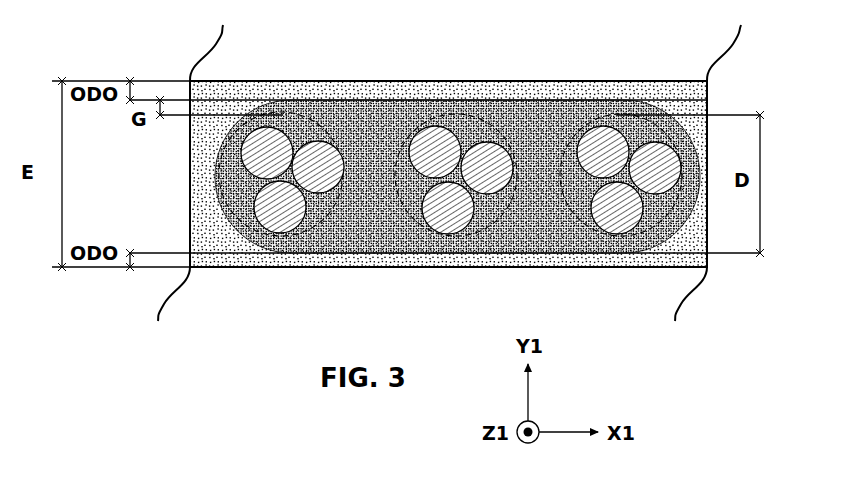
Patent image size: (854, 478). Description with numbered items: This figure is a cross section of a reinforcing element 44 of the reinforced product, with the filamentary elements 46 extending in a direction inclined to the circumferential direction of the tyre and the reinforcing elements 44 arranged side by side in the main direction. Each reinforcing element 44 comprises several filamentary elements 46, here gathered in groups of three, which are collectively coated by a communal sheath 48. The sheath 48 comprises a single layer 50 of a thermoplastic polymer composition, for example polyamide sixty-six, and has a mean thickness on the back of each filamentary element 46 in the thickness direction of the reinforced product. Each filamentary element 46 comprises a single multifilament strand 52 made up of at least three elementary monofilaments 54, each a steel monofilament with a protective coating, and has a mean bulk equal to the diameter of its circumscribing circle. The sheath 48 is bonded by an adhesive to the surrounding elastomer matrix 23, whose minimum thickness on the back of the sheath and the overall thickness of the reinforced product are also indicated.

The elastomer matrix 23 is at (573, 96).
The reinforcing element 44 is at (487, 89).
The communal sheath 48 is at (449, 97).
The filamentary element 46 is at (244, 204).
The layer of thermoplastic polymer composition 50 is at (462, 240).
The multifilament strand 52 is at (309, 200).
The elementary monofilament 54 is at (315, 142).